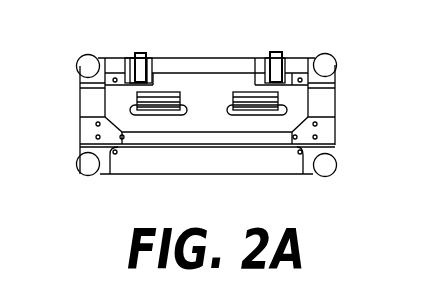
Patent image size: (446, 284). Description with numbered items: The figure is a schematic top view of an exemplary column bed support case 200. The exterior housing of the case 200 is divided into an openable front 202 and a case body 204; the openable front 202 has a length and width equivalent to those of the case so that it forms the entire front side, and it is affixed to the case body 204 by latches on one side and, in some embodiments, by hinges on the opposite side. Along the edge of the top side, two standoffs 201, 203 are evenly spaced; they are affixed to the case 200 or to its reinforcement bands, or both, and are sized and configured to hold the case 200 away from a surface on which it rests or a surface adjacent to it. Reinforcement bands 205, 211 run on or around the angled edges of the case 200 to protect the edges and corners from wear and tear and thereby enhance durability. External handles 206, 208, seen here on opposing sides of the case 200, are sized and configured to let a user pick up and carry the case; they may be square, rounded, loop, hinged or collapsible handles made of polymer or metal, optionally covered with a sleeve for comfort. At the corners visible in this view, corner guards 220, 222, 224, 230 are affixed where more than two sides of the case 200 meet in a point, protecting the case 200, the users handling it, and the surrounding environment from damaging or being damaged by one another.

The column bed support case 200 is at (359, 53).
The standoff 201 is at (138, 56).
The openable front 202 is at (283, 175).
The standoff 203 is at (275, 55).
The case body 204 is at (216, 88).
The reinforcement band 205 is at (152, 162).
The external handle 206 is at (137, 96).
The external handle 208 is at (278, 95).
The reinforcement band 211 is at (166, 60).
The corner guard 220 is at (327, 53).
The corner guard 222 is at (332, 164).
The corner guard 224 is at (80, 173).
The corner guard 230 is at (78, 62).